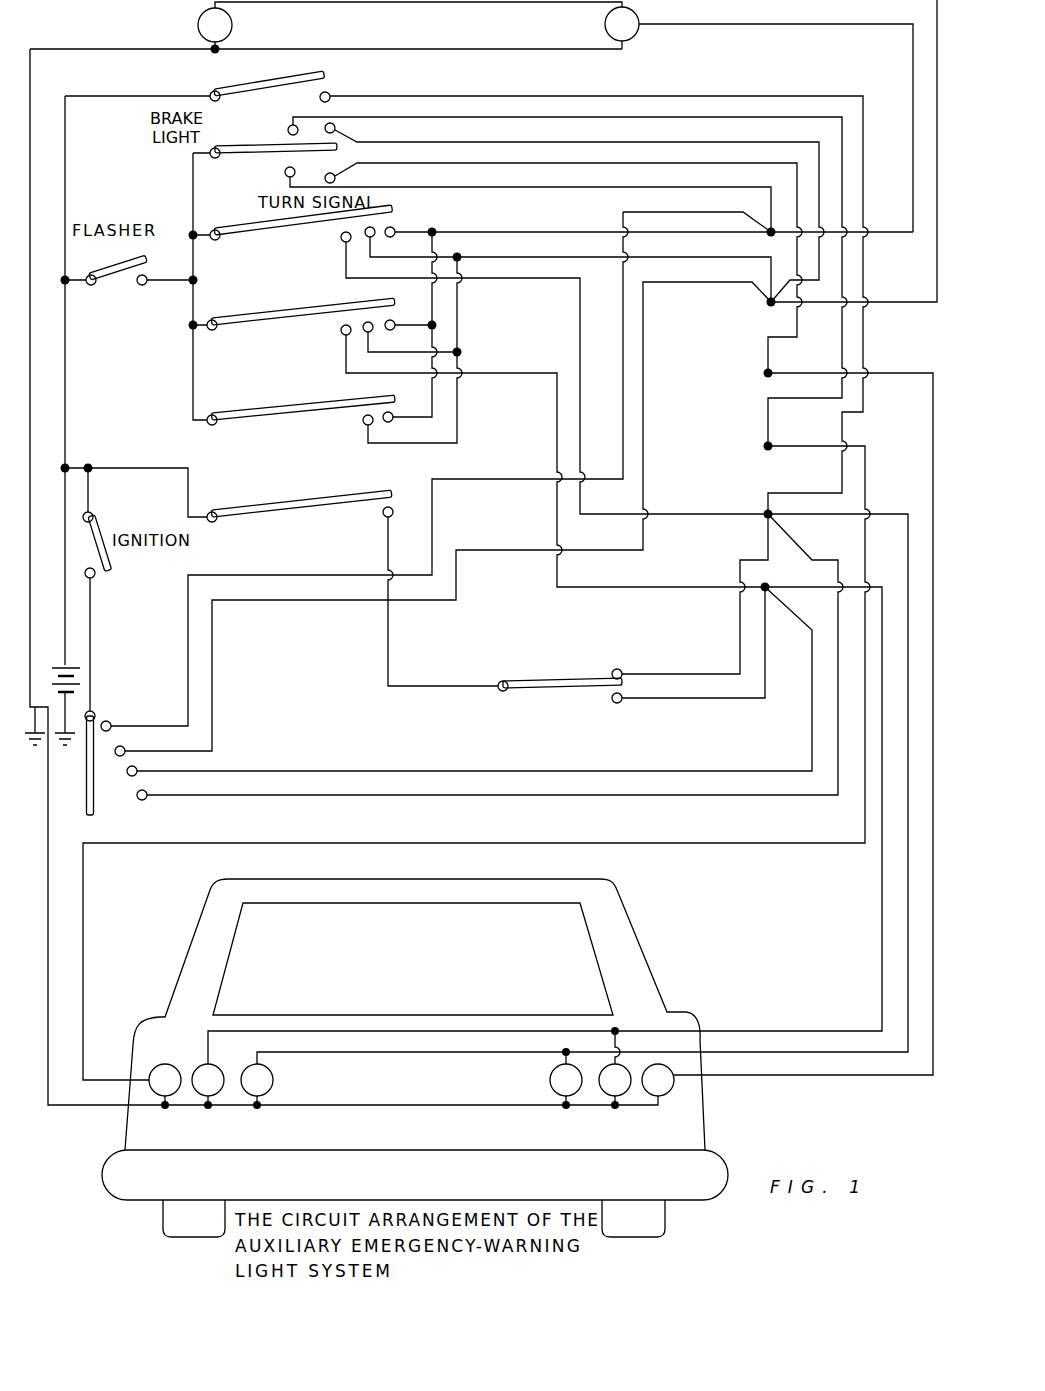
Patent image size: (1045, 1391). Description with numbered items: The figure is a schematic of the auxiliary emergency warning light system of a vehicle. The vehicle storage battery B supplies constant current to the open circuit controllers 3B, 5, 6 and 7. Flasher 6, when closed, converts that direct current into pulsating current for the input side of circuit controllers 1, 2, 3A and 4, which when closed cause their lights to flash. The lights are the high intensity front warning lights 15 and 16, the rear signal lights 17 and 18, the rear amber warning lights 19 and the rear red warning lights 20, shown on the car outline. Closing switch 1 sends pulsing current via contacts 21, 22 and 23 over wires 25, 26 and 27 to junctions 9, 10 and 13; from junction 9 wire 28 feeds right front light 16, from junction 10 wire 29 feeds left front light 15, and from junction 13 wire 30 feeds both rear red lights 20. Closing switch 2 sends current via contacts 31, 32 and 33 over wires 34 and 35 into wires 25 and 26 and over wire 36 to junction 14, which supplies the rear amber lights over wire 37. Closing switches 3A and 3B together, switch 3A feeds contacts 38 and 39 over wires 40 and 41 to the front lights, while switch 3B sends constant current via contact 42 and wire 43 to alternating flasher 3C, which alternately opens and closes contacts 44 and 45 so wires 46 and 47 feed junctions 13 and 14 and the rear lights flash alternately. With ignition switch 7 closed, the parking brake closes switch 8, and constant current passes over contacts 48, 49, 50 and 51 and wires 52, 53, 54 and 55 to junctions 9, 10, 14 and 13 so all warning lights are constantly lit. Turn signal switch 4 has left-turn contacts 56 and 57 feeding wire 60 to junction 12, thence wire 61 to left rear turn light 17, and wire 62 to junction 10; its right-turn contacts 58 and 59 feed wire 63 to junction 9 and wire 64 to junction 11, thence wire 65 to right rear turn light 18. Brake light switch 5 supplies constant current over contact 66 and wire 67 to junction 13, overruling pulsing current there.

The circuit controller 1 is at (219, 244).
The circuit controller 2 is at (217, 335).
The circuit controller 3A is at (218, 433).
The circuit controller 3B is at (219, 528).
The alternating flasher 3C is at (507, 694).
The turn signal switch 4 is at (220, 165).
The brake light switch 5 is at (223, 103).
The flasher 6 is at (138, 256).
The ignition switch 7 is at (98, 513).
The switch 8 is at (100, 711).
The junction 9 is at (772, 226).
The junction 10 is at (765, 302).
The junction 11 is at (764, 373).
The junction 12 is at (764, 446).
The junction 13 is at (764, 514).
The junction 14 is at (768, 585).
The left front warning light 15 is at (215, 25).
The right front warning light 16 is at (622, 24).
The left rear turn light 17 is at (165, 1080).
The right rear turn light 18 is at (658, 1080).
The rear amber warning light 19 is at (411, 1080).
The rear red warning light 20 is at (411, 1080).
The contact 21 is at (398, 224).
The contact 22 is at (376, 238).
The contact 23 is at (340, 242).
The wire 25 is at (522, 230).
The wire 26 is at (510, 256).
The wire 27 is at (505, 278).
The wire 28 is at (912, 152).
The wire 29 is at (935, 283).
The wire 30 is at (824, 516).
The contact 31 is at (394, 319).
The contact 32 is at (372, 333).
The contact 33 is at (341, 334).
The wire 34 is at (434, 298).
The wire 35 is at (459, 327).
The wire 36 is at (500, 373).
The wire 37 is at (803, 589).
The contact 38 is at (393, 422).
The contact 39 is at (364, 426).
The wire 40 is at (434, 395).
The wire 41 is at (459, 425).
The contact 42 is at (383, 519).
The wire 43 is at (440, 688).
The contact 44 is at (622, 671).
The contact 45 is at (623, 701).
The wire 46 is at (740, 638).
The wire 47 is at (766, 660).
The contact 48 is at (111, 723).
The contact 49 is at (125, 749).
The contact 50 is at (137, 772).
The contact 51 is at (147, 795).
The wire 52 is at (434, 515).
The wire 53 is at (459, 580).
The wire 54 is at (292, 771).
The wire 55 is at (360, 797).
The output contact 56 is at (291, 125).
The output contact 57 is at (336, 128).
The output contact 58 is at (285, 172).
The output contact 59 is at (336, 178).
The wire 60 is at (580, 117).
The wire 61 is at (757, 846).
The wire 62 is at (762, 140).
The wire 63 is at (548, 188).
The wire 64 is at (515, 160).
The wire 65 is at (930, 443).
The contact 66 is at (330, 93).
The wire 67 is at (666, 95).
The vehicle storage battery B is at (62, 664).